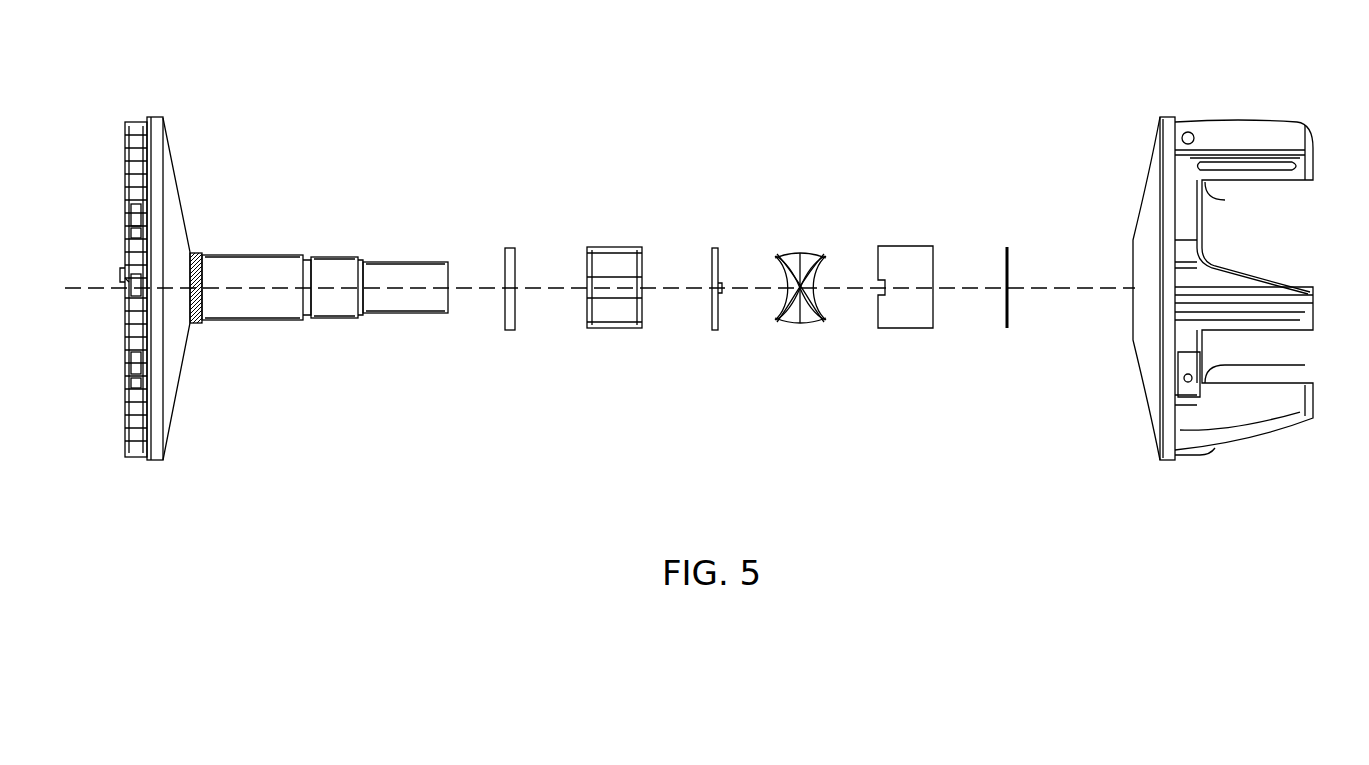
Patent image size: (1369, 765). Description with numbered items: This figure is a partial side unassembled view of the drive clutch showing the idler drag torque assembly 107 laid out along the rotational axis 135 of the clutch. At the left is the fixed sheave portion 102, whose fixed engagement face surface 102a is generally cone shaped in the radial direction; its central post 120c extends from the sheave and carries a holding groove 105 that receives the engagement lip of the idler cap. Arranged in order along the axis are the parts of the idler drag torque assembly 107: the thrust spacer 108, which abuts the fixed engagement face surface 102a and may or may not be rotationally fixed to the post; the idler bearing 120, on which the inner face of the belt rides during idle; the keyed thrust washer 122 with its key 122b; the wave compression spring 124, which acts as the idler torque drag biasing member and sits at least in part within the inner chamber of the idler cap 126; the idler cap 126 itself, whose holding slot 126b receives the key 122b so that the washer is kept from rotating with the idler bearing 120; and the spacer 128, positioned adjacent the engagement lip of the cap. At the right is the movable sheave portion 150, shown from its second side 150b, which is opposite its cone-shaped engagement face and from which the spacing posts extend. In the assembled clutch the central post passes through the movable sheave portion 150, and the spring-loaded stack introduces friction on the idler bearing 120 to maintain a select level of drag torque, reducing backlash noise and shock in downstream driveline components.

The fixed sheave portion 102 is at (267, 98).
The fixed engagement face surface 102a is at (175, 404).
The holding groove 105 is at (306, 322).
The idler drag torque assembly 107 is at (577, 130).
The thrust spacer 108 is at (511, 250).
The idler bearing 120 is at (620, 264).
The shaft 120c is at (242, 268).
The keyed thrust washer 122 is at (714, 320).
The key 122b is at (719, 284).
The wave compression spring 124 is at (800, 324).
The idler cap 126 is at (904, 258).
The holding slot 126b is at (886, 292).
The spacer 128 is at (1008, 333).
The rotational axis 135 is at (1090, 287).
The movable sheave portion 150 is at (1099, 128).
The second side 150b is at (1148, 376).